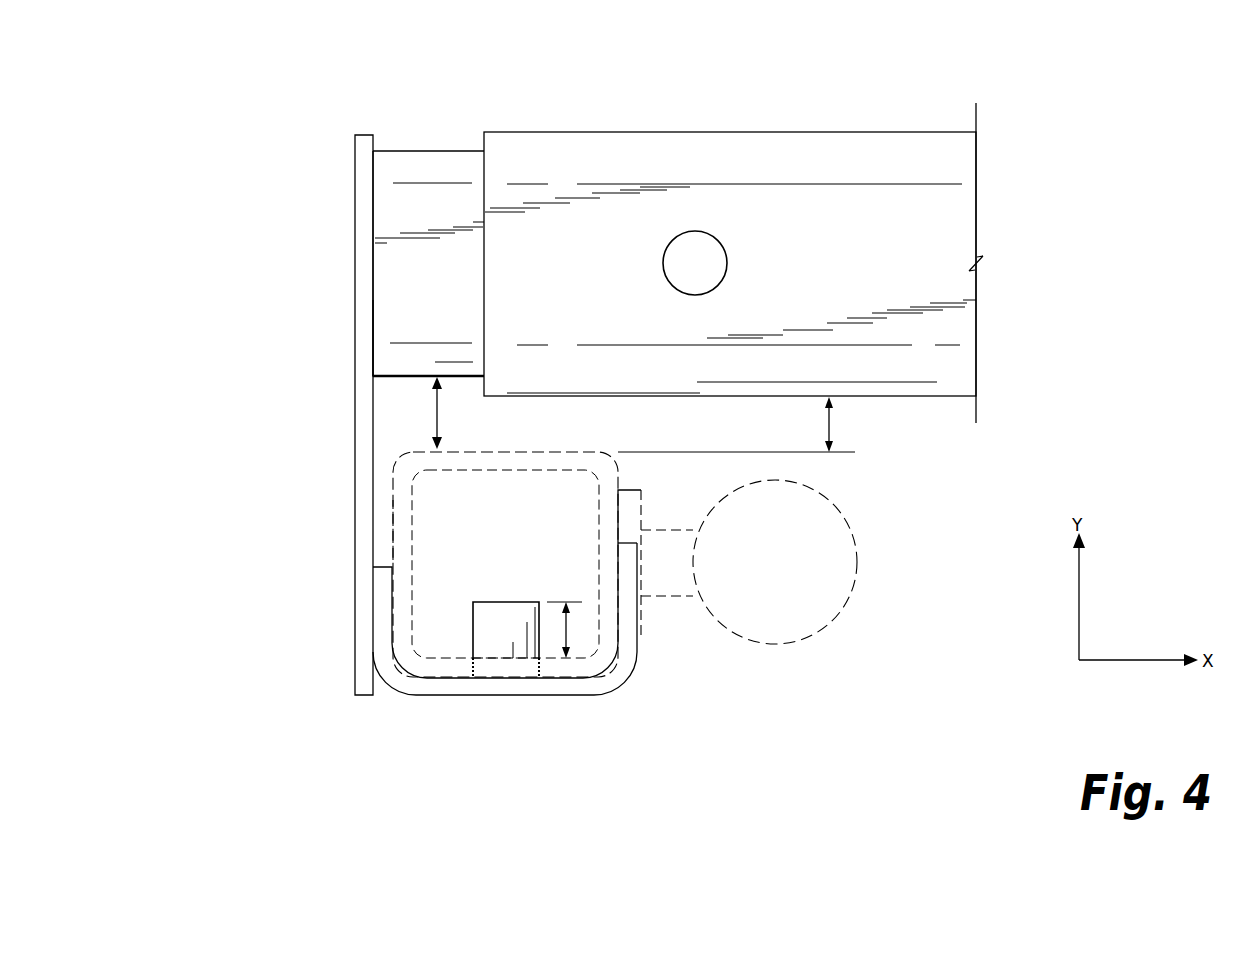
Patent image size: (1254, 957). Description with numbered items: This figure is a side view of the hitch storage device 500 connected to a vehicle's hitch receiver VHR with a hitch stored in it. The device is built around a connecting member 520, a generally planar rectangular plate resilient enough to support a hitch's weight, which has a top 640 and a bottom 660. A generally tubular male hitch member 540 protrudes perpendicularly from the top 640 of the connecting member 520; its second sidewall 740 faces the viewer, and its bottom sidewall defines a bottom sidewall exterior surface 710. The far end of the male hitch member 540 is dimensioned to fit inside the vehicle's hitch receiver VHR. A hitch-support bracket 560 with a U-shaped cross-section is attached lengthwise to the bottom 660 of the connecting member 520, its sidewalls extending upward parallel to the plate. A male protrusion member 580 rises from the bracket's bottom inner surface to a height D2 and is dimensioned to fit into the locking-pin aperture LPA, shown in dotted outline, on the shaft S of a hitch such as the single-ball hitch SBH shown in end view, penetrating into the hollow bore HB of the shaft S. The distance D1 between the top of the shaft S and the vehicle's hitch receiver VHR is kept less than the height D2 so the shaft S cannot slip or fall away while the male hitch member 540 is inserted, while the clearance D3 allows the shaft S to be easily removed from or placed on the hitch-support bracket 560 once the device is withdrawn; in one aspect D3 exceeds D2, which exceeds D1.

The hitch storage device 500 is at (322, 712).
The connecting member 520 is at (362, 407).
The male hitch member 540 is at (428, 165).
The hitch-support bracket 560 is at (550, 695).
The male protrusion member 580 is at (500, 601).
The top of connecting member 640 is at (363, 184).
The bottom of connecting member 660 is at (363, 643).
The bottom sidewall exterior surface 710 is at (400, 376).
The second sidewall of male hitch member 740 is at (451, 305).
The vehicle hitch receiver VHR is at (708, 132).
The shaft of hitch S is at (403, 533).
The hollow bore of shaft HB is at (443, 572).
The locking-pin aperture LPA is at (503, 665).
The single-ball hitch SBH is at (665, 583).
The distance between top of shaft and vehicle hitch receiver D1 is at (736, 424).
The height of male protrusion member D2 is at (569, 630).
The clearance distance D3 is at (445, 413).